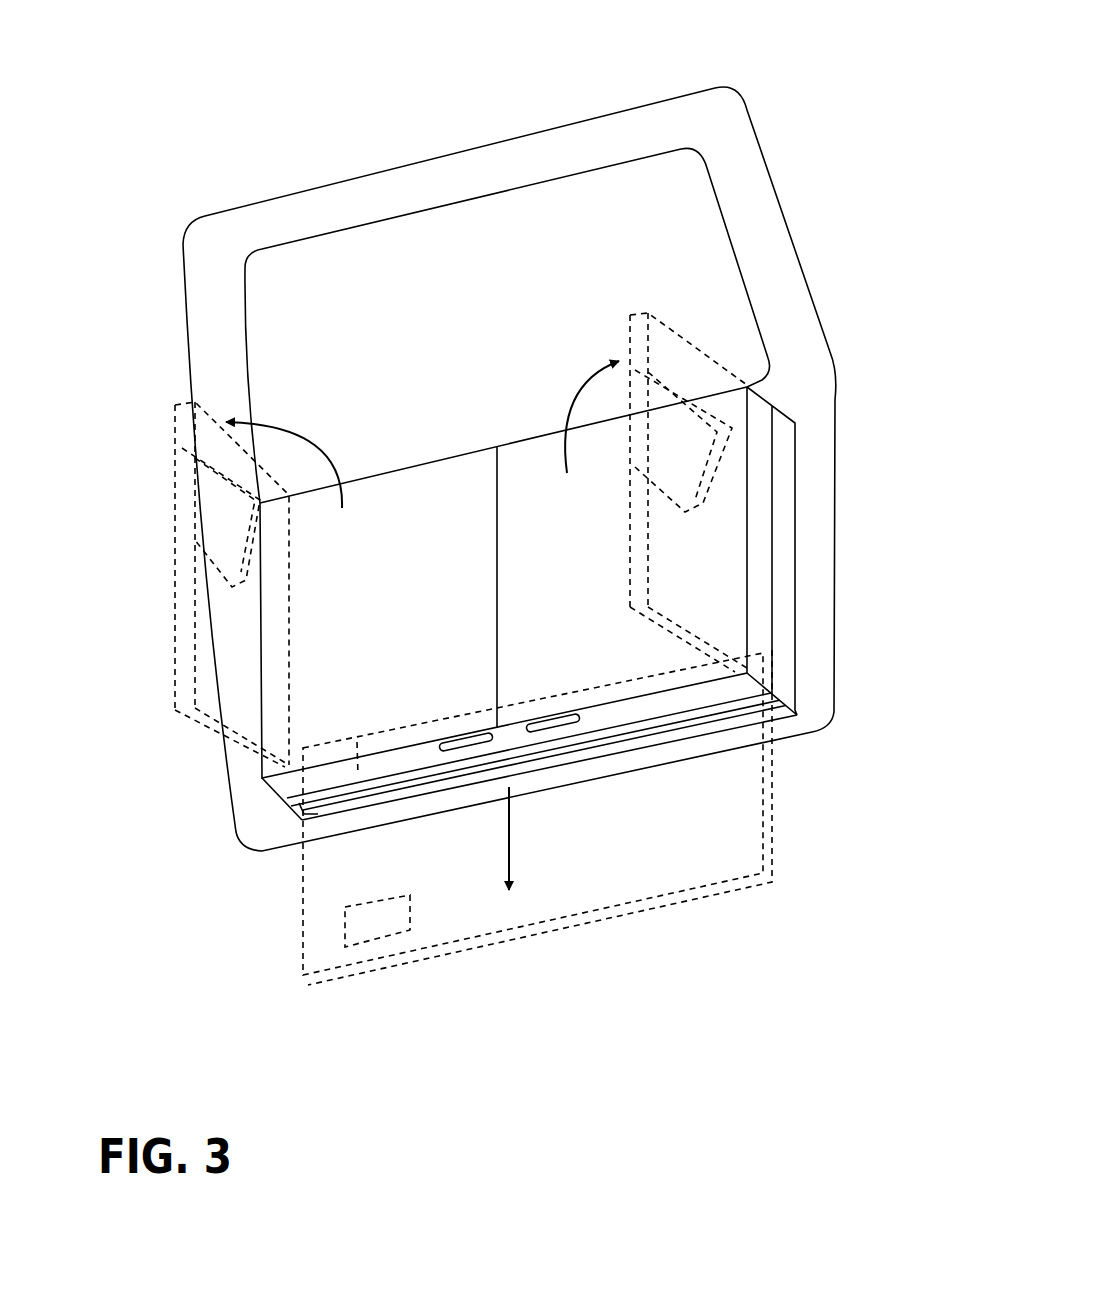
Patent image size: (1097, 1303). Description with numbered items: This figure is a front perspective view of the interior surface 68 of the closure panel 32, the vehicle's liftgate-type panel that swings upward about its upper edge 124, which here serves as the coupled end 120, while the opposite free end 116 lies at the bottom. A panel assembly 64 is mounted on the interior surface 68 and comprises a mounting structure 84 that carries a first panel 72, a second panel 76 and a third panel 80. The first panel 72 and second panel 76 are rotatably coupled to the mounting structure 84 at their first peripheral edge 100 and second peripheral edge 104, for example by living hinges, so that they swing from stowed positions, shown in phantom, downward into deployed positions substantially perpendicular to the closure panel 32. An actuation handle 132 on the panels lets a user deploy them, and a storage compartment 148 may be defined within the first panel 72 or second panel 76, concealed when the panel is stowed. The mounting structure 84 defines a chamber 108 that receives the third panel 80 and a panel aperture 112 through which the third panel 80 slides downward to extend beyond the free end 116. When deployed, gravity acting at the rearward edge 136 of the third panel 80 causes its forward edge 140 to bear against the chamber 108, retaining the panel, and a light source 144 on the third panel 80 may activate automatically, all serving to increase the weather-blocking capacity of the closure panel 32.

The closure panel 32 is at (752, 108).
The panel assembly 64 is at (771, 667).
The interior surface 68 is at (790, 383).
The first panel 72 is at (157, 652).
The second panel 76 is at (697, 555).
The third panel 80 is at (622, 855).
The mounting structure 84 is at (783, 623).
The first peripheral edge 100 is at (262, 778).
The second peripheral edge 104 is at (755, 483).
The chamber 108 is at (312, 814).
The panel aperture 112 is at (297, 805).
The free end 116 is at (793, 740).
The coupled end 120 is at (413, 152).
The upper edge 124 is at (533, 126).
The actuation handle 132 is at (457, 750).
The rearward edge 136 is at (750, 893).
The forward edge 140 is at (358, 775).
The light source 144 is at (363, 927).
The storage compartment 148 is at (213, 510).